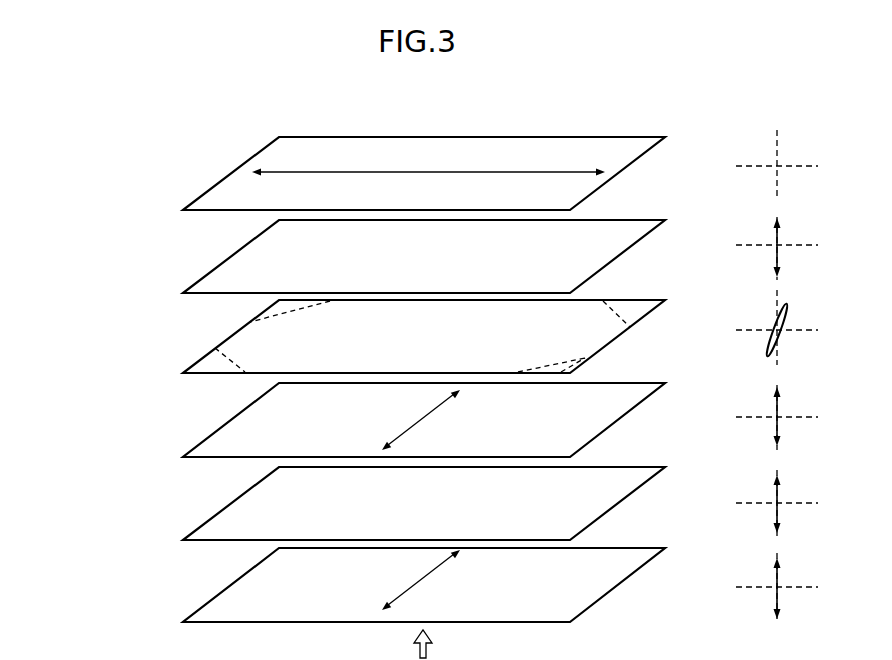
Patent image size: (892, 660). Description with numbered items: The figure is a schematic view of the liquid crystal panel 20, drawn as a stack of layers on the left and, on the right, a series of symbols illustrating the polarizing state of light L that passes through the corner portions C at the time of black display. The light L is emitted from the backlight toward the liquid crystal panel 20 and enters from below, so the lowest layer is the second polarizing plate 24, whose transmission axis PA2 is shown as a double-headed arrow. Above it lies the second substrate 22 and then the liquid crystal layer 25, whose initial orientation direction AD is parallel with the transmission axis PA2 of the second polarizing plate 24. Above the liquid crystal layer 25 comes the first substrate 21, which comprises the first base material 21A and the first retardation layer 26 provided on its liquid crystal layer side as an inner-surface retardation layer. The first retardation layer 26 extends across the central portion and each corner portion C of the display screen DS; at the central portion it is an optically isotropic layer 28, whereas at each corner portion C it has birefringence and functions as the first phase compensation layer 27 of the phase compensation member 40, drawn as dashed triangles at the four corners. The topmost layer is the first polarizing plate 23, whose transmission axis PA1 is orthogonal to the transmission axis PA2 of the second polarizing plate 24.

The liquid crystal panel 20 is at (209, 115).
The first polarizing plate 23 is at (232, 187).
The first substrate 21 is at (121, 262).
The first base material 21A is at (234, 271).
The first retardation layer 26 is at (237, 334).
The first phase compensation layer 27 is at (387, 311).
The phase compensation member 40 is at (288, 298).
The isotropic layer 28 is at (428, 322).
The liquid crystal layer 25 is at (231, 435).
The second substrate 22 is at (231, 518).
The second polarizing plate 24 is at (231, 598).
The corner portion C is at (270, 130).
The display screen DS is at (343, 160).
The transmission axis of the first polarizing plate PA1 is at (428, 172).
The initial orientation direction AD is at (424, 420).
The transmission axis of the second polarizing plate PA2 is at (424, 580).
The light L is at (430, 648).